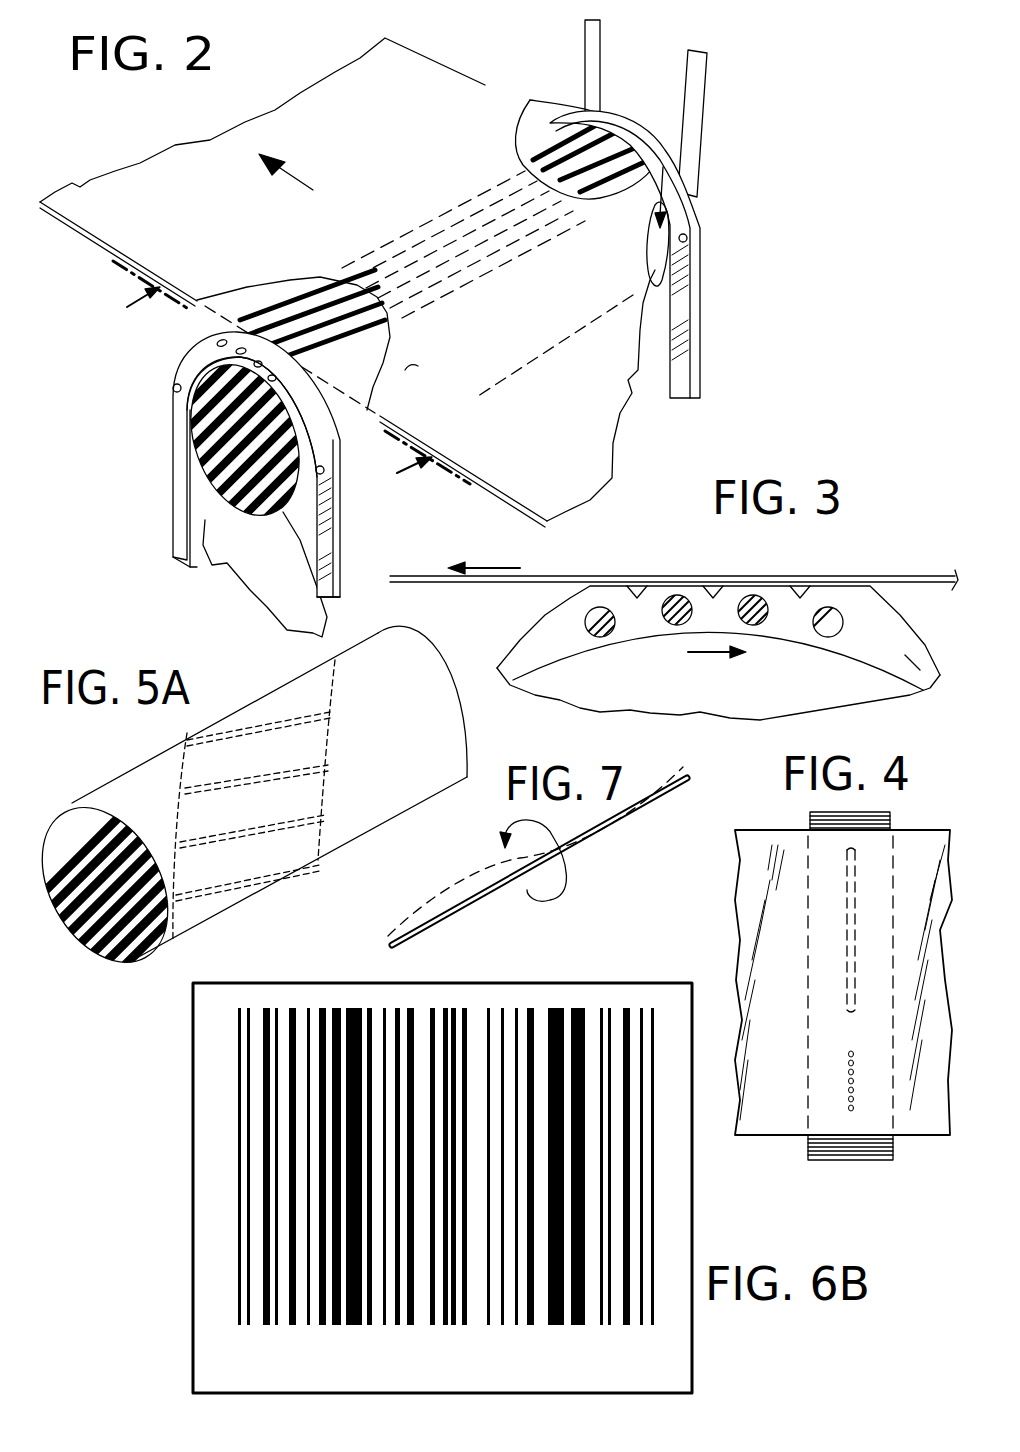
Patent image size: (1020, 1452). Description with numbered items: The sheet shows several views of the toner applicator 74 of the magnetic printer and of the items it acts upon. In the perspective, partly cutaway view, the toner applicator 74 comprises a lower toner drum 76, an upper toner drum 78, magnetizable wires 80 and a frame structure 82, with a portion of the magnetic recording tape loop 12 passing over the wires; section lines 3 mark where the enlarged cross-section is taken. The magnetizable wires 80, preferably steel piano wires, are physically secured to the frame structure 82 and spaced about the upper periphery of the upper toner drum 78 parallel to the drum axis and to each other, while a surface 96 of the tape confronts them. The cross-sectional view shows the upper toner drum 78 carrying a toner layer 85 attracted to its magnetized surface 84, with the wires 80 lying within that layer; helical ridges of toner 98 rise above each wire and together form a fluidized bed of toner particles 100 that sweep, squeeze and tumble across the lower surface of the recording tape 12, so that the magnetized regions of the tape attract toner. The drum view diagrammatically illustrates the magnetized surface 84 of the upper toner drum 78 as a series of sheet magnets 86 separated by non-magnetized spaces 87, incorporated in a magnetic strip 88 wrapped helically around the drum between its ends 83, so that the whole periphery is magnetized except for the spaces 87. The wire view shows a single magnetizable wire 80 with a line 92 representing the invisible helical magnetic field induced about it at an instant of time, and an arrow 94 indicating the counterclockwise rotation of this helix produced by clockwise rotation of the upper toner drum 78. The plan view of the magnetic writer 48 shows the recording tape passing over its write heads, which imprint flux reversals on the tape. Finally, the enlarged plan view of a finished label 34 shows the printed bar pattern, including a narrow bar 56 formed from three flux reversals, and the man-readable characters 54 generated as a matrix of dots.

In FIG. 2, the section lines 3— 3 is at (284, 383).
In FIG. 2, the magnetic recording tape loop 12 is at (506, 333).
In FIG. 3, the magnetic recording tape loop 12 is at (897, 578).
In FIG. 6B, the label 34 is at (678, 1370).
In FIG. 4, the magnetic writer 48 is at (902, 826).
In FIG. 6B, the man-readable characters 54 is at (286, 1360).
In FIG. 6B, the bar 56 is at (492, 1012).
In FIG. 2, the toner applicator 74 is at (548, 120).
In FIG. 2, the lower toner drum 76 is at (262, 582).
In FIG. 2, the upper toner drum 78 is at (255, 500).
In FIG. 3, the upper toner drum 78 is at (741, 703).
In FIG. 5A, the upper toner drum 78 is at (441, 658).
In FIG. 2, the magnetizable wires 80 is at (390, 240).
In FIG. 3, the magnetizable wires 80 is at (612, 636).
In FIG. 7, the magnetizable wires 80 is at (451, 920).
In FIG. 2, the frame structure 82 is at (172, 472).
In FIG. 5A, the ends of upper toner drum 83 is at (415, 645).
In FIG. 5A, the magnetized surface 84 is at (455, 716).
In FIG. 2, the toner layer 85 is at (686, 187).
In FIG. 3, the toner layer 85 is at (915, 660).
In FIG. 5A, the sheet magnets 86 is at (332, 734).
In FIG. 5A, the non-magnetized spaces 87 is at (330, 765).
In FIG. 5A, the magnetic strip 88 is at (340, 690).
In FIG. 7, the magnetic field line (helix) 92 is at (445, 896).
In FIG. 7, the arrow 94 is at (566, 873).
In FIG. 2, the web surface 96 is at (428, 361).
In FIG. 3, the helical ridges of toner 98 is at (590, 586).
In FIG. 3, the fluidized bed of toner particles 100 is at (637, 596).